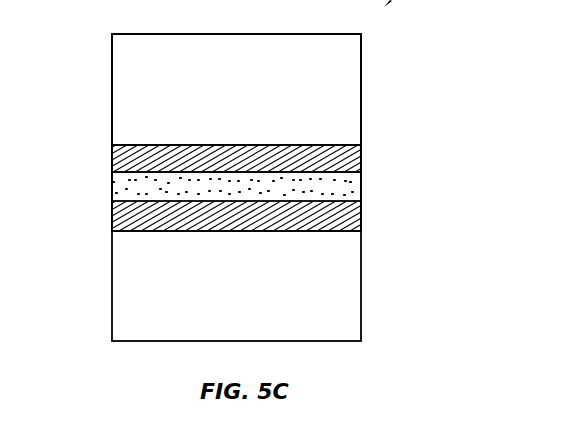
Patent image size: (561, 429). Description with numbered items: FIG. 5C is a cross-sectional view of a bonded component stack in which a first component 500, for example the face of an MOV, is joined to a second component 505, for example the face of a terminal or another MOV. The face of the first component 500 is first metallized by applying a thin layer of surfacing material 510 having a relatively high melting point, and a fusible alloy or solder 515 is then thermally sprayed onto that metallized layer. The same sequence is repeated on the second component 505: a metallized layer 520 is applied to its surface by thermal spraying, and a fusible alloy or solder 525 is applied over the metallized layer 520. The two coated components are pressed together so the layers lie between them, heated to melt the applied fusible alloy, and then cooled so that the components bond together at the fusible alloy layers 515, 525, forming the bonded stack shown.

The first component 500 is at (361, 283).
The second component 505 is at (112, 88).
The metallized layer 520 is at (112, 155).
The surfacing material 510 is at (112, 212).
The fusible alloy or solder 515 is at (361, 185).
The fusible alloy or solder 525 is at (446, 127).